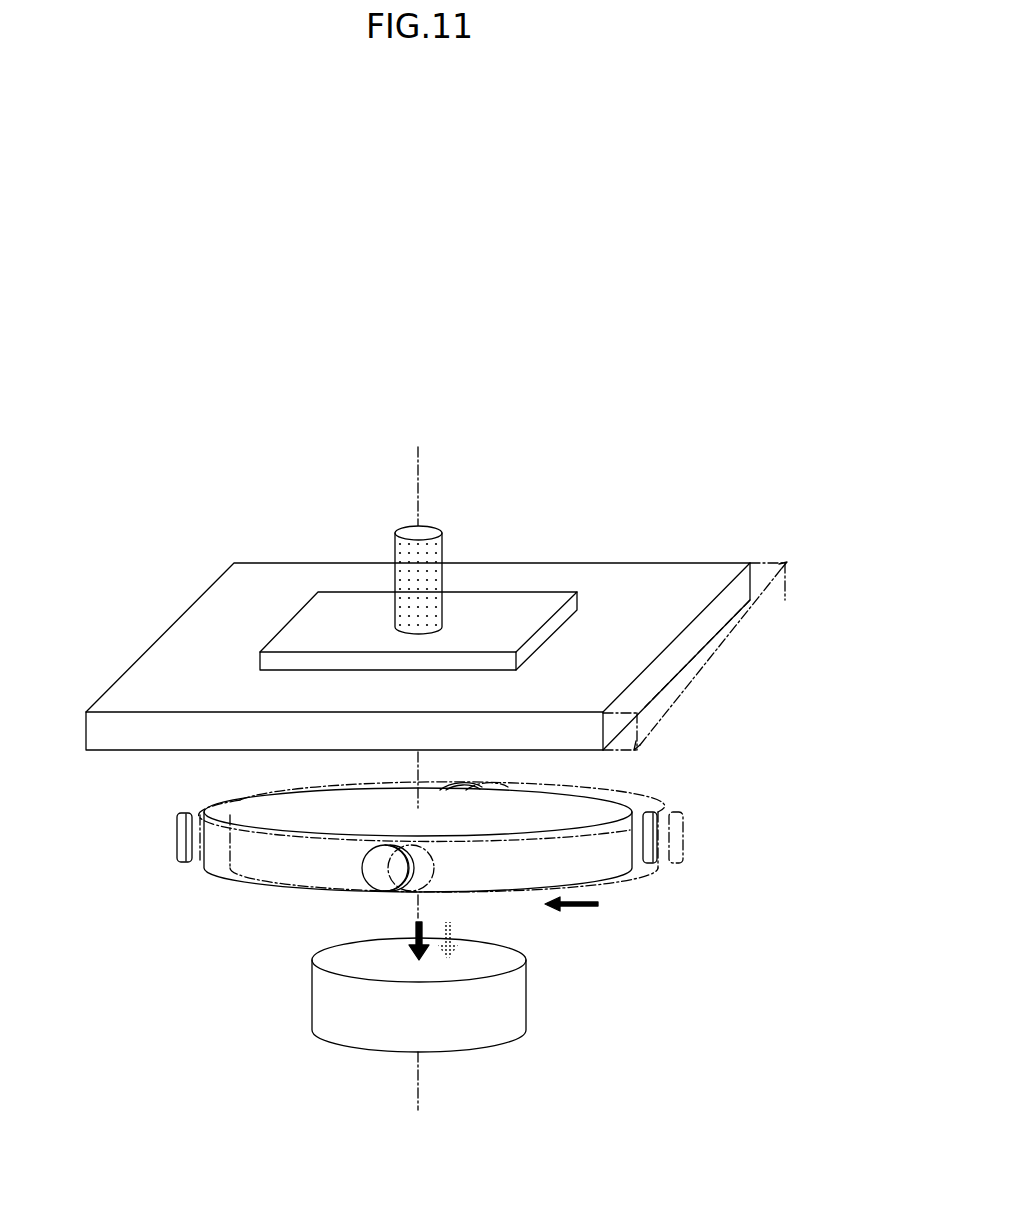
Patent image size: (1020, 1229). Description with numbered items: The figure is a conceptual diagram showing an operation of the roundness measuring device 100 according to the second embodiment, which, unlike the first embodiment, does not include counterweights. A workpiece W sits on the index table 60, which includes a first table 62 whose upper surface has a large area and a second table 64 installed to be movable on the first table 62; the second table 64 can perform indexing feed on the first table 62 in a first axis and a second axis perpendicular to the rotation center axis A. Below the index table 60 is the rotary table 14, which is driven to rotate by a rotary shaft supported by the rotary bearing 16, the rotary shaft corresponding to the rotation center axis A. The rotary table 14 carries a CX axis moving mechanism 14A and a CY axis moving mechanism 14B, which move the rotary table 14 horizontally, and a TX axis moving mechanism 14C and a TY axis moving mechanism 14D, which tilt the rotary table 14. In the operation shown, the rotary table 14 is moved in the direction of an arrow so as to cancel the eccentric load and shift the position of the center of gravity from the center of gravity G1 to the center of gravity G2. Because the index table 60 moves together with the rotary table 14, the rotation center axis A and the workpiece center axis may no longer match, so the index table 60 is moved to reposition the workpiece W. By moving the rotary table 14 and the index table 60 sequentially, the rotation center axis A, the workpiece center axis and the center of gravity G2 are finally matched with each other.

The roundness measuring device 100 is at (713, 382).
The index table 60 is at (712, 549).
The first table 62 is at (640, 578).
The second table 64 is at (540, 600).
The workpiece W is at (432, 548).
The rotation center axis A is at (455, 762).
The rotary table 14 is at (638, 800).
The CX axis moving mechanism 14A is at (653, 838).
The CY axis moving mechanism 14B is at (378, 882).
The TX axis moving mechanism 14C is at (177, 838).
The TY axis moving mechanism 14D is at (468, 789).
The rotary bearing 16 is at (518, 997).
The center of gravity G1 is at (458, 930).
The center of gravity G2 is at (412, 930).